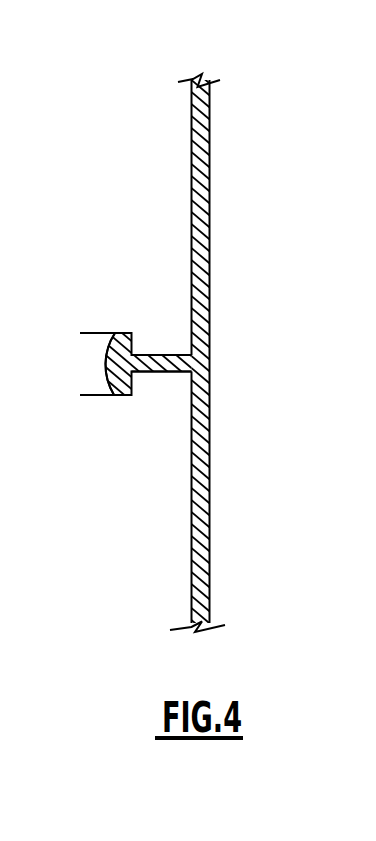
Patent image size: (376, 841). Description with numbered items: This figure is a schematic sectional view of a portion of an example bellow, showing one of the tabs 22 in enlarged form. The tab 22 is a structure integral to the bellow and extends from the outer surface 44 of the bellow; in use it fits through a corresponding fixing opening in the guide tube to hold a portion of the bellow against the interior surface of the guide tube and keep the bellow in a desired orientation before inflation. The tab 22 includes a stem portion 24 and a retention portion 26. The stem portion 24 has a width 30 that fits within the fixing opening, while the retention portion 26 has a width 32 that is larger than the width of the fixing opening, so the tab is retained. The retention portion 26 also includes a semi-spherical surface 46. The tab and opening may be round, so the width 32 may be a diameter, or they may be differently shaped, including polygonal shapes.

The outer surface 44 is at (176, 146).
The tab 22 is at (129, 320).
The stem portion 24 is at (170, 355).
The width 30 is at (170, 388).
The retention portion 26 is at (99, 333).
The width 32 is at (87, 412).
The semi-spherical surface 46 is at (92, 366).